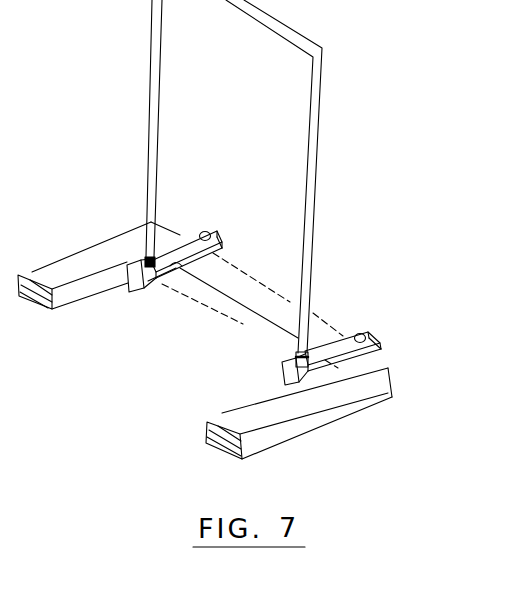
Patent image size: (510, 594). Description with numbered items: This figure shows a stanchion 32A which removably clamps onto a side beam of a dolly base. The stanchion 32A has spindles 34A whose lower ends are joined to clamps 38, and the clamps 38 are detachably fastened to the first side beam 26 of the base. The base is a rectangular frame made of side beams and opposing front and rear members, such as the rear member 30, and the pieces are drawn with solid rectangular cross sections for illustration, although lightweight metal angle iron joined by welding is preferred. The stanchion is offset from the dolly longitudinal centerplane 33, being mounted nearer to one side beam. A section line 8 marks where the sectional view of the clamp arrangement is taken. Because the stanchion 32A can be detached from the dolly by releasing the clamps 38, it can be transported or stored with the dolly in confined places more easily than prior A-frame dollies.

The section line 8- 8 is at (185, 285).
The first side beam 26 is at (262, 328).
The rear member 30 is at (80, 251).
The stanchion 32A is at (321, 155).
The dolly longitudinal centerplane 33 is at (310, 425).
The spindle 34A is at (150, 110).
The clamp 38 is at (190, 243).